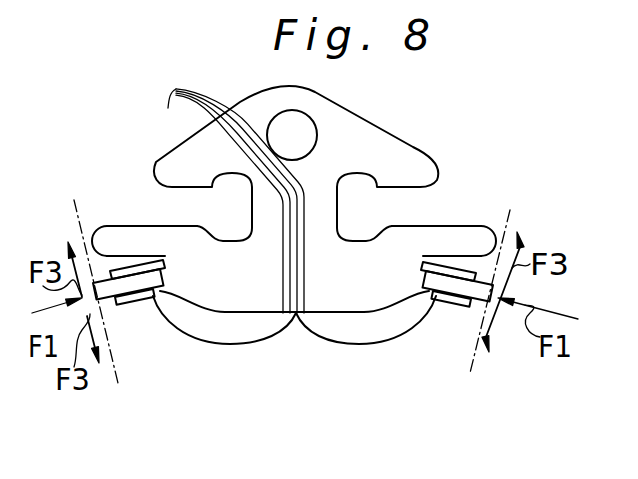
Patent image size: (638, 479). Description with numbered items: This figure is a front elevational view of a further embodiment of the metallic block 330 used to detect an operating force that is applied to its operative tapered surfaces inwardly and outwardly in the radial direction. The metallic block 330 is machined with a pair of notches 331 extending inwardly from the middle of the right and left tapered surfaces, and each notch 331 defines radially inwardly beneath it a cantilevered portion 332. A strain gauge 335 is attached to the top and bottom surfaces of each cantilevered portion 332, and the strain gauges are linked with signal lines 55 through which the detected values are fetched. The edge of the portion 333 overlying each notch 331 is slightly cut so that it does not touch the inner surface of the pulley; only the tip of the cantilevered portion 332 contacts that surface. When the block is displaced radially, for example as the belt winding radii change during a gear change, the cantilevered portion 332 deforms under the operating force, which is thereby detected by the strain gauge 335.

The metallic block 330 is at (437, 124).
The notch 331 is at (105, 260).
The portion overlying the notch 333 is at (101, 236).
The cantilevered portion 332 is at (108, 302).
The strain gauge 335 is at (142, 305).
The signal lines 55 is at (341, 341).